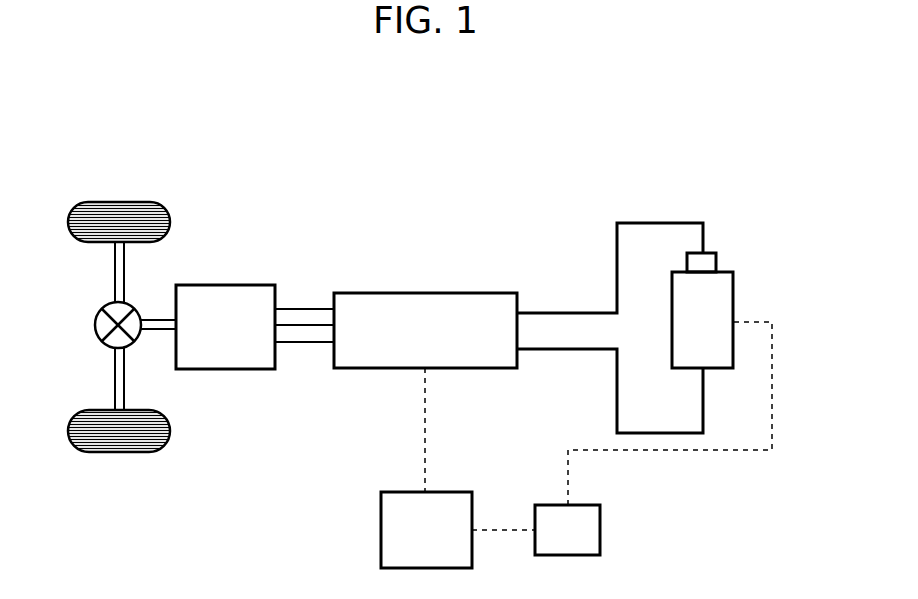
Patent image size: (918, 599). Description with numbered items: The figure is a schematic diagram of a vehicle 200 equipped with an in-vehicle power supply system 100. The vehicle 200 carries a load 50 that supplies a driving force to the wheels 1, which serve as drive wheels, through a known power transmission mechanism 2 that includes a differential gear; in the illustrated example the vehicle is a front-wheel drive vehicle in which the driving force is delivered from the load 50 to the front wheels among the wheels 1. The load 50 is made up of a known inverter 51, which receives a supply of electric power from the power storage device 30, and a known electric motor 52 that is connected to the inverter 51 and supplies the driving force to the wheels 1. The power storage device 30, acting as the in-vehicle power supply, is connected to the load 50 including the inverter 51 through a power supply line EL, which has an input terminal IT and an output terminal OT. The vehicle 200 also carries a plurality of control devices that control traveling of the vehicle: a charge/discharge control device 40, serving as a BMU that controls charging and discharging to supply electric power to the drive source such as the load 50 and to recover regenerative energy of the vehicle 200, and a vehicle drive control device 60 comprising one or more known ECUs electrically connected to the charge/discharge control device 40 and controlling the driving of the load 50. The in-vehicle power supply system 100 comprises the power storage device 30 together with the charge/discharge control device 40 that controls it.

The wheels 1 is at (85, 203).
The power transmission mechanism 2 is at (98, 312).
The load 50 is at (420, 152).
The inverter 51 is at (366, 293).
The electric motor 52 is at (245, 285).
The power supply line EL is at (583, 295).
The power storage device 30 is at (720, 369).
The input terminal IT is at (705, 250).
The output terminal OT is at (700, 371).
The charge/discharge control device 40 is at (600, 527).
The vehicle drive control device 60 is at (381, 527).
The in-vehicle power supply system 100 is at (778, 513).
The vehicle 200 is at (832, 113).